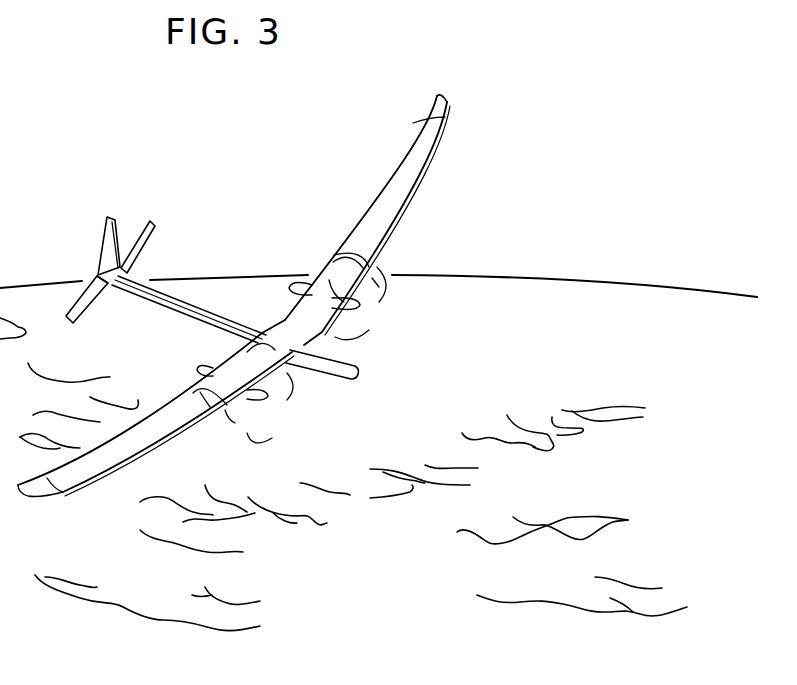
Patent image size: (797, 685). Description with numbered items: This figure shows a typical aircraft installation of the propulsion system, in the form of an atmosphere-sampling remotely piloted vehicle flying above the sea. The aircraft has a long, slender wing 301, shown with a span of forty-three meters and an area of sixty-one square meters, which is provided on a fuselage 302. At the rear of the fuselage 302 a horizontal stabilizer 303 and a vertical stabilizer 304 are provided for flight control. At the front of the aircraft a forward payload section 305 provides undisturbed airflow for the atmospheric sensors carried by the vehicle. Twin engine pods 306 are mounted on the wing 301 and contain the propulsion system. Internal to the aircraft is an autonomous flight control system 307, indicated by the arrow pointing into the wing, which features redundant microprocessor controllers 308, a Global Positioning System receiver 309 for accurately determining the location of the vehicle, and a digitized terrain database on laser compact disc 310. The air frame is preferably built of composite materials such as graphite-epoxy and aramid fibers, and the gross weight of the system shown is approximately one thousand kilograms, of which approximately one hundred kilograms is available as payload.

The wing 301 is at (443, 97).
The fuselage 302 is at (197, 318).
The horizontal stabilizer 303 is at (152, 222).
The vertical stabilizer 304 is at (106, 220).
The forward payload section 305 is at (367, 380).
The engine pods 306 is at (366, 310).
The autonomous flight control system 307 is at (221, 139).
The redundant microprocessor controllers 308 is at (247, 162).
The Global Positioning System receiver 309 is at (261, 195).
The digitized terrain database on laser compact disc 310 is at (255, 292).